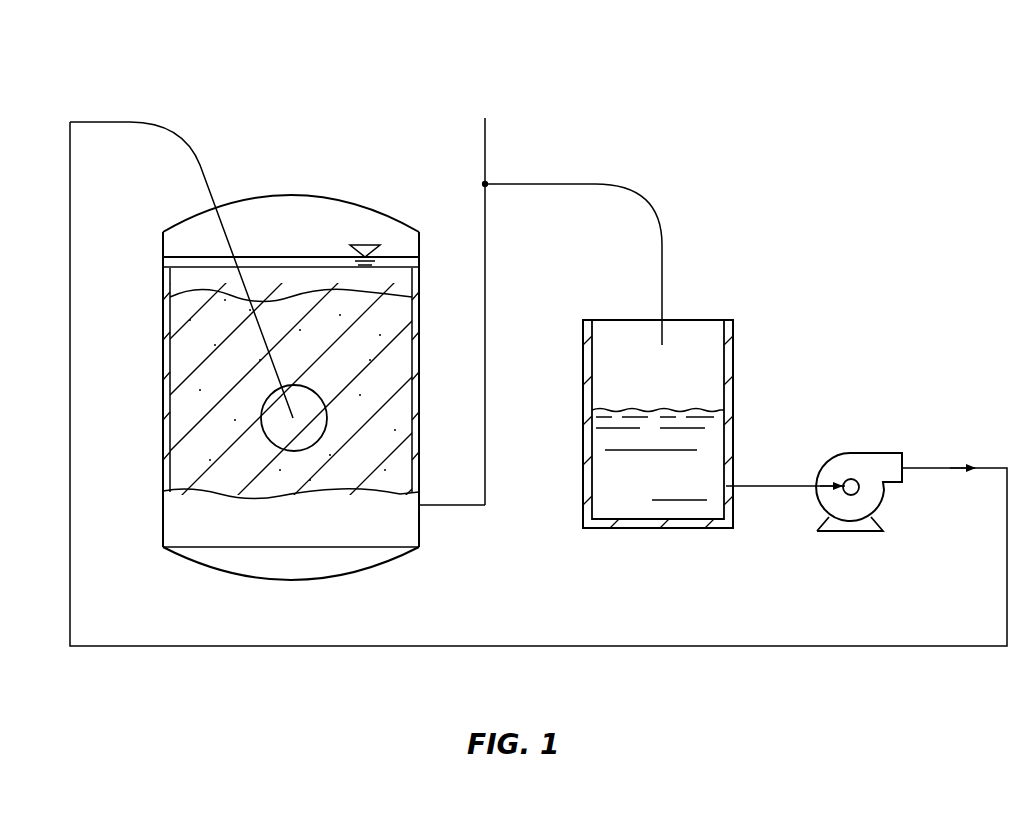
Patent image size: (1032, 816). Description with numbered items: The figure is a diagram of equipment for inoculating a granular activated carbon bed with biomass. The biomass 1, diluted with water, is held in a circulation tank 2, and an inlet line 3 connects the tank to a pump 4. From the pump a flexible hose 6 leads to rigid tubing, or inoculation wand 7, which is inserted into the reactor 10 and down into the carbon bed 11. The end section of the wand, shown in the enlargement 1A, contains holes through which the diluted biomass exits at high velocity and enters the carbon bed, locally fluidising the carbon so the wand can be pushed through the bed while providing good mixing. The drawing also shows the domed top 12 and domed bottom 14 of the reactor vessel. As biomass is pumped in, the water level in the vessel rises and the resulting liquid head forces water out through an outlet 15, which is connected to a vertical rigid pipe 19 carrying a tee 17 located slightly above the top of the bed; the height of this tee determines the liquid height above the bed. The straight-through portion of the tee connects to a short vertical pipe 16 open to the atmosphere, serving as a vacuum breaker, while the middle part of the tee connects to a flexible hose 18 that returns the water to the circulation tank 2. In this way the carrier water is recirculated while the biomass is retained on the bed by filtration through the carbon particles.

The biomass 1 is at (703, 444).
The enlargement of rigid tubing end 1A is at (320, 396).
The circulation tank 2 is at (735, 353).
The inlet line 3 is at (800, 487).
The pump 4 is at (887, 453).
The flexible hose 6 is at (77, 110).
The rigid tubing (inoculation wand) 7 is at (215, 173).
The reactor 10 is at (163, 354).
The carbon bed 11 is at (195, 404).
The top dome of tank 12 is at (183, 222).
The bottom dome of tank 14 is at (191, 562).
The outlet 15 is at (422, 508).
The vertical pipe open to the atmosphere 16 is at (480, 138).
The tee 17 is at (499, 177).
The flexible hose 18 is at (650, 195).
The vertical rigid pipe 19 is at (485, 282).